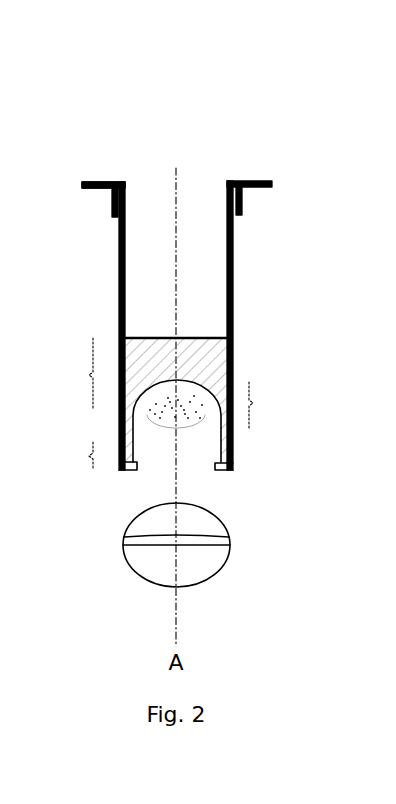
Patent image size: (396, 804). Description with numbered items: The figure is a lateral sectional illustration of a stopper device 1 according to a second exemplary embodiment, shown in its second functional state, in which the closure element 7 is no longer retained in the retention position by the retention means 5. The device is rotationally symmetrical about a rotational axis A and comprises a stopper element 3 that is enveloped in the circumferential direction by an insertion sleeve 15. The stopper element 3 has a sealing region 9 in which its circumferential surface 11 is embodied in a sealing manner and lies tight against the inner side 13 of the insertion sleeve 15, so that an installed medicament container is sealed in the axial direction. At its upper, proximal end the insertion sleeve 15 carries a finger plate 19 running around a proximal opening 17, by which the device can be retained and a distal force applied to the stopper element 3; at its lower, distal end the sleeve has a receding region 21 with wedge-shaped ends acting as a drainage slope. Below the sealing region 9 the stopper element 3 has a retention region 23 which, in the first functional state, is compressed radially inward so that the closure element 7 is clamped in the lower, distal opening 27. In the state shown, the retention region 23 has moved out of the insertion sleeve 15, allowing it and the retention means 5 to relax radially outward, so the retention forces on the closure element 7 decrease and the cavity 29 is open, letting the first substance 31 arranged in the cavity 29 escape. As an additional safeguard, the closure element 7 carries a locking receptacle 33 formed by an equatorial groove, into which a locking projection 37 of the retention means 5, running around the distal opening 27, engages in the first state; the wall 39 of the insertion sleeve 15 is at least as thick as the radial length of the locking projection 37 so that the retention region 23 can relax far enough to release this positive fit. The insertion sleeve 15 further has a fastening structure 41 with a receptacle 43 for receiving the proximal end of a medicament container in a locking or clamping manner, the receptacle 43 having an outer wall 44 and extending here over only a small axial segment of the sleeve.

The stopper device 1 is at (80, 124).
The stopper element 3 is at (204, 336).
The retention means 5 is at (125, 477).
The closure element 7 is at (200, 568).
The sealing region 9 is at (81, 373).
The circumferential surface 11 is at (234, 365).
The inner side 13 is at (125, 225).
The insertion sleeve 15 is at (234, 250).
The proximal opening 17 is at (200, 180).
The finger plate 19 is at (250, 181).
The receding region 21 is at (266, 405).
The retention region 23 is at (78, 456).
The distal opening 27 is at (142, 485).
The cavity 29 is at (192, 403).
The first substance 31 is at (222, 420).
The locking receptacle 33 is at (230, 545).
The locking projection 37 is at (214, 470).
The wall 39 is at (119, 280).
The fastening structure 41 is at (108, 197).
The receptacle 43 is at (115, 220).
The outer wall 44 is at (243, 204).